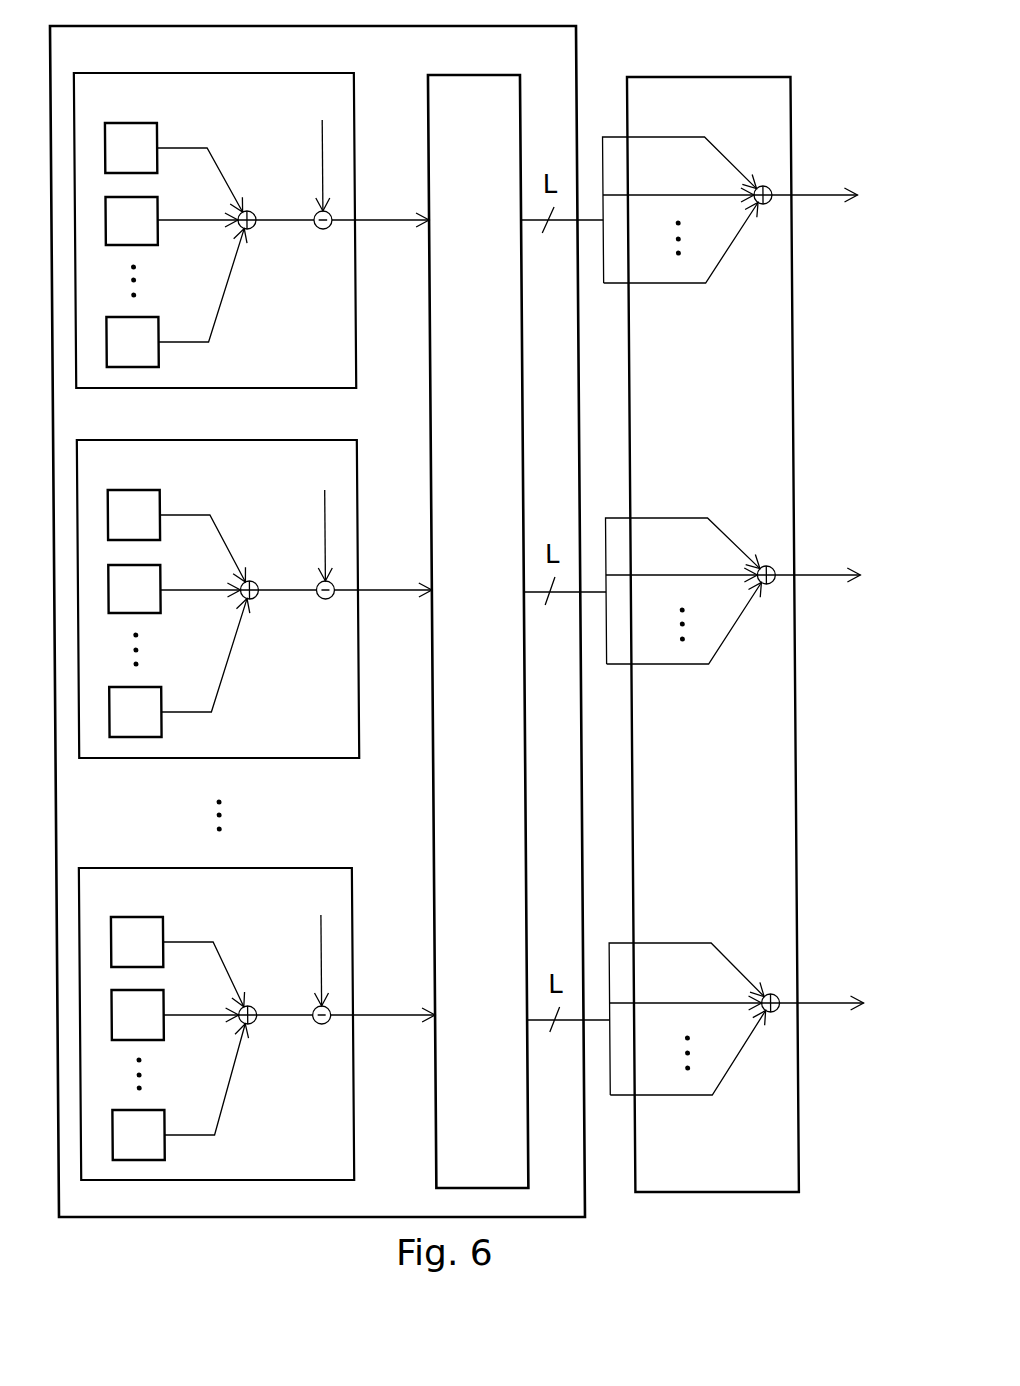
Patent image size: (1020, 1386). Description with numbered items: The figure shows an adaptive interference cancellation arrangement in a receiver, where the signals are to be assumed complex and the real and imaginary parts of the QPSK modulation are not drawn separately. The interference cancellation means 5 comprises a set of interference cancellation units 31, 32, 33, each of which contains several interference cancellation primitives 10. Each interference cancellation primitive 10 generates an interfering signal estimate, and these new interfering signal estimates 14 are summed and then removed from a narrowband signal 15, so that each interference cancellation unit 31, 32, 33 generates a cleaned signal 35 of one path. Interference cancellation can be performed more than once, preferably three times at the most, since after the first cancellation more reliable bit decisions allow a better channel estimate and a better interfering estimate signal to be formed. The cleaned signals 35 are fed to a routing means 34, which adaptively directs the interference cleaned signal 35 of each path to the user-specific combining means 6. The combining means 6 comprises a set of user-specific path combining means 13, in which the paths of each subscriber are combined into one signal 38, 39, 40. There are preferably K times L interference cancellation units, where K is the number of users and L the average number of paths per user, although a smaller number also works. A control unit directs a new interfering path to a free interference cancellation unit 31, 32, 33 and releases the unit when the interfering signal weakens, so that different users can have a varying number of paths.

The interference cancellation means 5 is at (577, 67).
The combining means 6 is at (676, 77).
The interference cancellation primitive 10 is at (157, 137).
The user-specific path combining means 13 is at (316, 212).
The interfering signal estimate 14 is at (216, 167).
The narrowband signal 15 is at (319, 155).
The interference cancellation unit 31 is at (303, 73).
The interference cancellation unit 32 is at (302, 440).
The interference cancellation unit 33 is at (299, 868).
The routing means 34 is at (455, 75).
The cleaned signal 35 is at (360, 218).
The combined signal 38 is at (798, 195).
The combined signal 39 is at (801, 575).
The combined signal 40 is at (800, 1003).